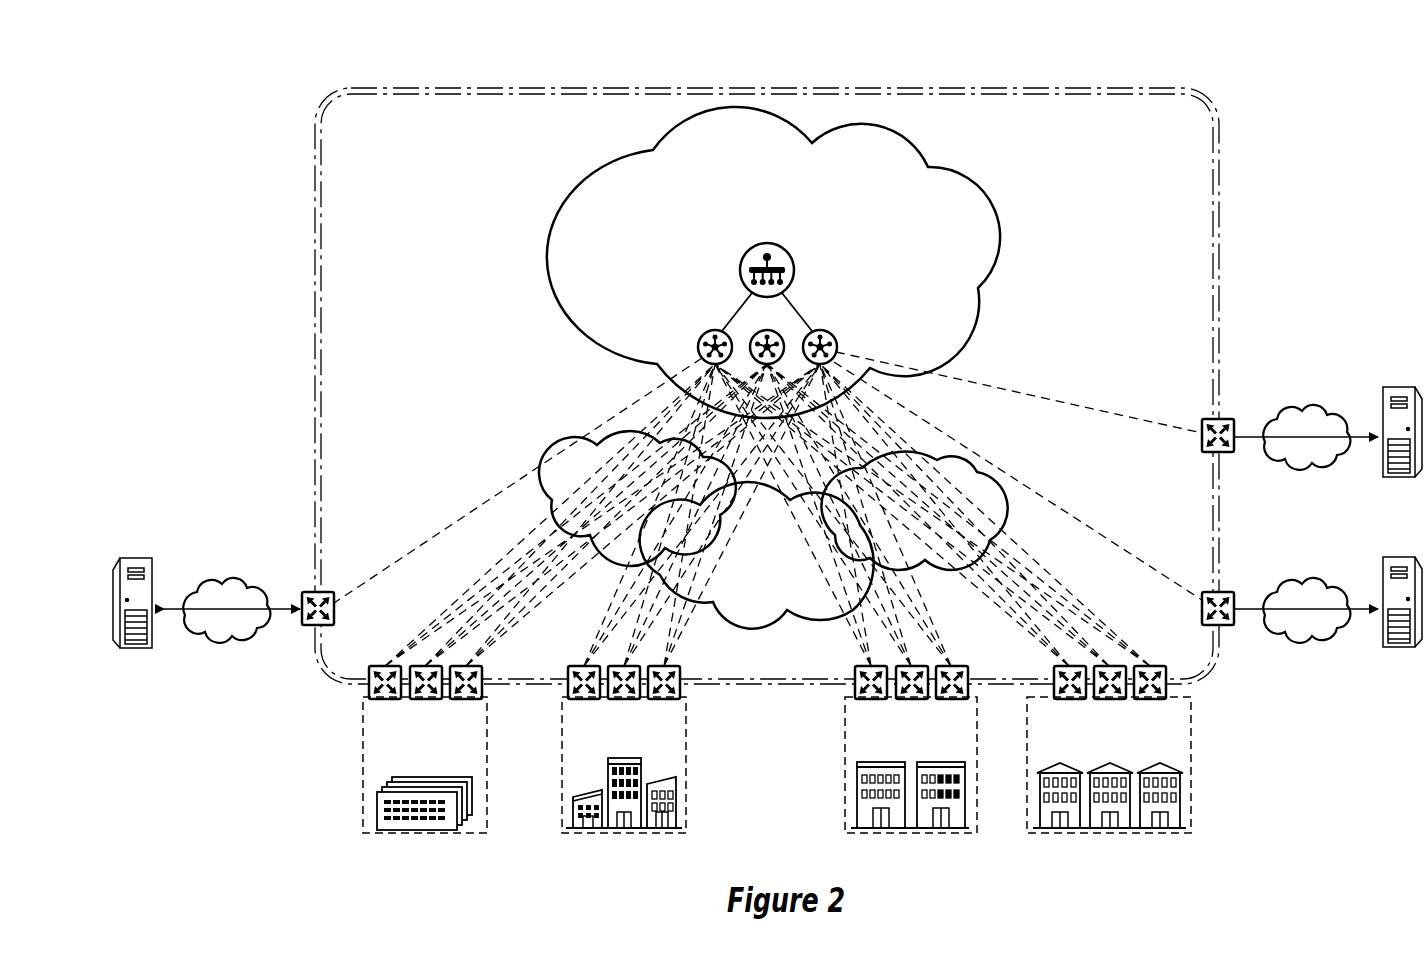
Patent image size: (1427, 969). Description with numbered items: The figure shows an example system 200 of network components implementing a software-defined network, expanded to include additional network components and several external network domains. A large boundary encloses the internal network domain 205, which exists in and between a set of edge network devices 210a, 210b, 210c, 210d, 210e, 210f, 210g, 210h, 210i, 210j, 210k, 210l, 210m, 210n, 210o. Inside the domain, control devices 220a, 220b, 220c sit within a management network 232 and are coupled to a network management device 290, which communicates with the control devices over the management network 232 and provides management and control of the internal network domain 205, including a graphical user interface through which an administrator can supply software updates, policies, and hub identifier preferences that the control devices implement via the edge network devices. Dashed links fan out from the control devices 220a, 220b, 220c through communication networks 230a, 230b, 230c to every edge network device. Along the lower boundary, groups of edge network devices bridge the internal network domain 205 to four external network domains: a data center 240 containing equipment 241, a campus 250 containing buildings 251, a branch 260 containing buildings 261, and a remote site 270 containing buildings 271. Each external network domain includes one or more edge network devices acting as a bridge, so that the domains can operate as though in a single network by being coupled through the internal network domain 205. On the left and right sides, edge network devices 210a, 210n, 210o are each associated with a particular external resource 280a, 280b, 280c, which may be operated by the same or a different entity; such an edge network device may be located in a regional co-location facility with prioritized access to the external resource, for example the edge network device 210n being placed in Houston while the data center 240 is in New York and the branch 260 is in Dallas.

The system 200 is at (1215, 48).
The internal network domain 205 is at (1221, 152).
The management network 232 is at (958, 165).
The network management device 290 is at (795, 262).
The control device 220a is at (703, 338).
The control device 220b is at (758, 336).
The control device 220c is at (835, 338).
The communication network 230a is at (552, 474).
The communication network 230b is at (784, 580).
The communication network 230c is at (1003, 473).
The edge network device 210a is at (316, 592).
The edge network device 210b is at (372, 699).
The edge network device 210c is at (427, 699).
The edge network device 210d is at (482, 697).
The edge network device 210e is at (572, 699).
The edge network device 210f is at (625, 699).
The edge network device 210g is at (680, 699).
The edge network device 210h is at (858, 699).
The edge network device 210i is at (908, 699).
The edge network device 210j is at (955, 699).
The edge network device 210k is at (1060, 699).
The edge network device 210l is at (1120, 699).
The edge network device 210m is at (1166, 690).
The edge network device 210n is at (1218, 592).
The edge network device 210o is at (1218, 419).
The data center 240 is at (430, 784).
The server racks 241 is at (393, 831).
The campus 250 is at (629, 784).
The campus buildings 251 is at (594, 830).
The branch 260 is at (919, 784).
The office buildings 261 is at (890, 831).
The remote site 270 is at (1116, 784).
The branch buildings 271 is at (1100, 831).
The external resource 280a is at (130, 558).
The external resource 280b is at (1405, 557).
The external resource 280c is at (1405, 387).